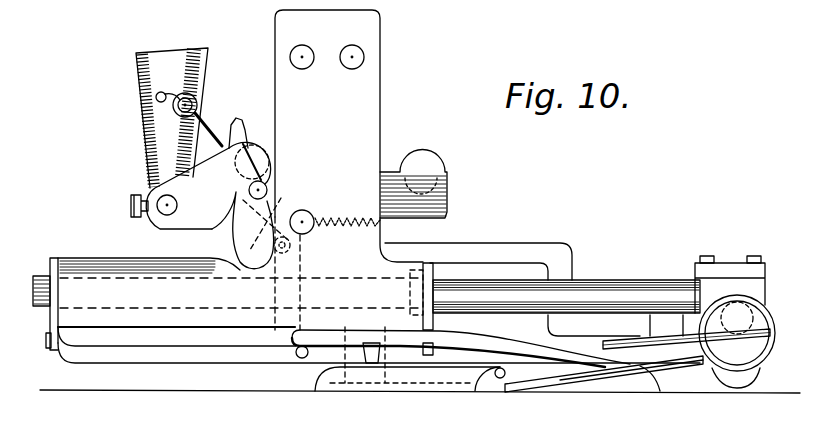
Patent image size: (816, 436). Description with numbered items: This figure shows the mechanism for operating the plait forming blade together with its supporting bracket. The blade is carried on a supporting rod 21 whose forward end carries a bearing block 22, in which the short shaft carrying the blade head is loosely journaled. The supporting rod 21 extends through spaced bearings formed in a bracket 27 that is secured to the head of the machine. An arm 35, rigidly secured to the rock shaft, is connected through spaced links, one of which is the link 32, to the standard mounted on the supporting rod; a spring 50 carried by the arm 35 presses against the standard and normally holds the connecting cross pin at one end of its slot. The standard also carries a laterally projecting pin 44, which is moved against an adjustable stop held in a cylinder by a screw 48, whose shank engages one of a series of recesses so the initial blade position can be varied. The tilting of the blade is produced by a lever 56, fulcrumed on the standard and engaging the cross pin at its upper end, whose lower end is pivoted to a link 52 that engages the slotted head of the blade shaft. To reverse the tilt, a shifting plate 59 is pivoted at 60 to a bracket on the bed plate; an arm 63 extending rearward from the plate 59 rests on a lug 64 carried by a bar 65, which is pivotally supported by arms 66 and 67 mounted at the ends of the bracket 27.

The supporting rod 21 is at (619, 292).
The bearing block 22 is at (713, 288).
The bracket 27 is at (367, 112).
The link 32 is at (210, 197).
The arm 35 is at (155, 133).
The laterally projecting pin 44 is at (264, 187).
The screw 48 is at (430, 166).
The spring 50 is at (207, 128).
The link 52 is at (497, 255).
The lever 56 is at (243, 232).
The shifting plate 59 is at (622, 380).
The pivot 60 is at (500, 379).
The arm 63 is at (405, 330).
The lug 64 is at (300, 357).
The bar 65 is at (148, 358).
The arm 66 is at (51, 328).
The arm 67 is at (430, 316).